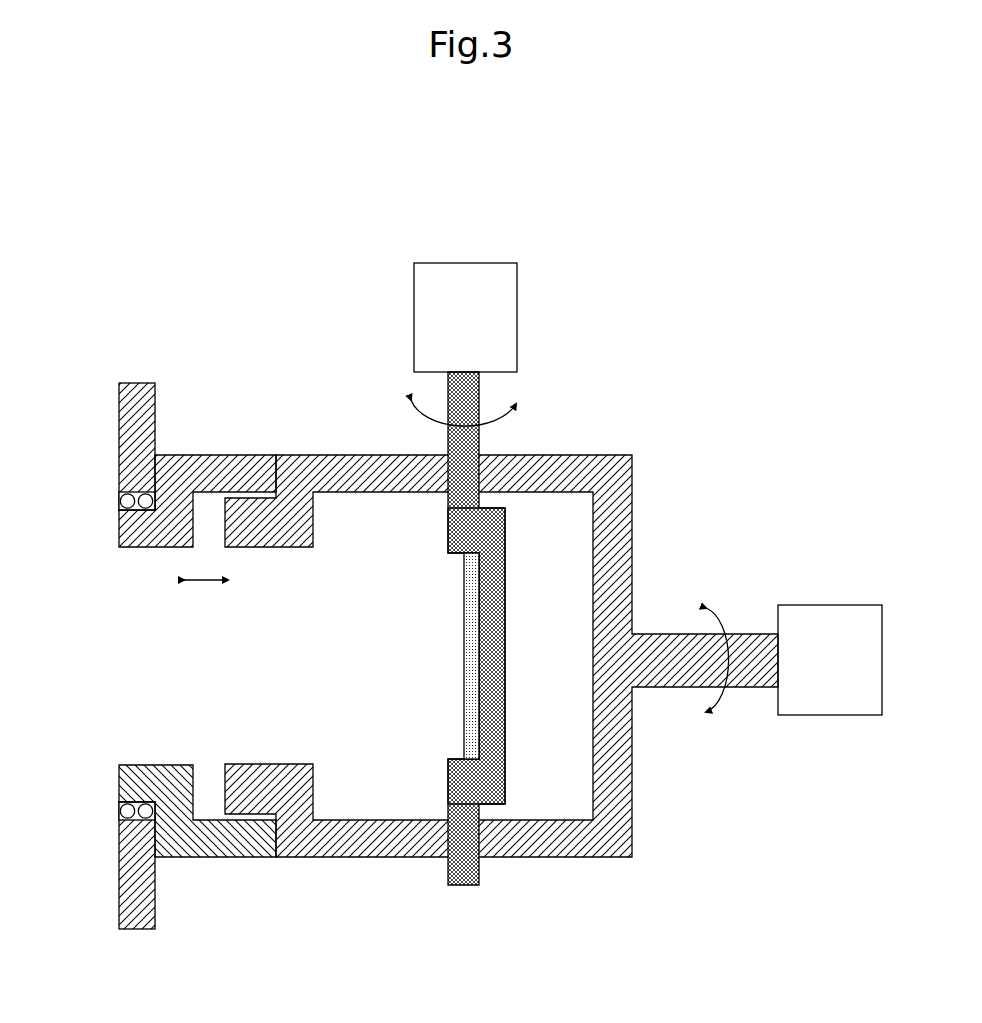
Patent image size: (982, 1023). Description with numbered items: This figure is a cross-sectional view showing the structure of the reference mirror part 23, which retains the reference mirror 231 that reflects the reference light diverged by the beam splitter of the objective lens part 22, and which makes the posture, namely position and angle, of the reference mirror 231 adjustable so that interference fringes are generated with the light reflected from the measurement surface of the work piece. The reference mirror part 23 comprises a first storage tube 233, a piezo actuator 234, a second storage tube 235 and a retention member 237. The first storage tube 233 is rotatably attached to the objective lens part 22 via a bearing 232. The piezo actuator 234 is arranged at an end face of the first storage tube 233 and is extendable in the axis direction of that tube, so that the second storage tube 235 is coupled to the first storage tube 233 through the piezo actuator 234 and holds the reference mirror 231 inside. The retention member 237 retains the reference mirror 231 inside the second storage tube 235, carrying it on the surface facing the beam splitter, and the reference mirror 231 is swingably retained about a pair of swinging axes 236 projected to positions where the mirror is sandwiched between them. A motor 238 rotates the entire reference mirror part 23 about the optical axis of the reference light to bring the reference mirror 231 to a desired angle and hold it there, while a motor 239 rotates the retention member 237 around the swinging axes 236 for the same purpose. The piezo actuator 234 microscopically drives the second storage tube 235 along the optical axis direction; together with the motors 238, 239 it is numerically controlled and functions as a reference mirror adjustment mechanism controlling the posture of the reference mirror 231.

The reference mirror part 23 is at (432, 197).
The objective lens part 22 is at (155, 392).
The reference mirror 231 is at (463, 652).
The bearing 232 is at (119, 500).
The first storage tube 233 is at (193, 454).
The piezo actuator 234 is at (198, 546).
The second storage tube 235 is at (594, 453).
The swinging axes 236 is at (453, 386).
The retention member 237 is at (450, 541).
The motor 238 is at (813, 604).
The motor 239 is at (493, 263).